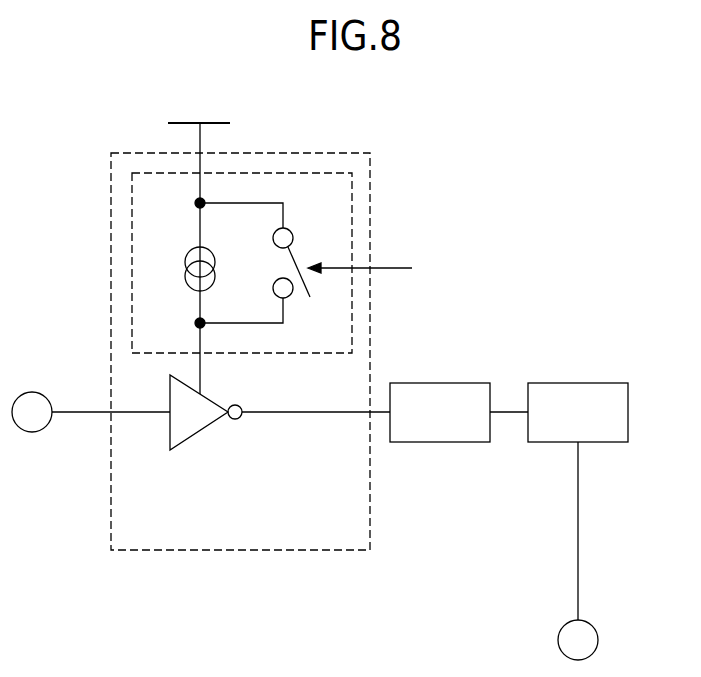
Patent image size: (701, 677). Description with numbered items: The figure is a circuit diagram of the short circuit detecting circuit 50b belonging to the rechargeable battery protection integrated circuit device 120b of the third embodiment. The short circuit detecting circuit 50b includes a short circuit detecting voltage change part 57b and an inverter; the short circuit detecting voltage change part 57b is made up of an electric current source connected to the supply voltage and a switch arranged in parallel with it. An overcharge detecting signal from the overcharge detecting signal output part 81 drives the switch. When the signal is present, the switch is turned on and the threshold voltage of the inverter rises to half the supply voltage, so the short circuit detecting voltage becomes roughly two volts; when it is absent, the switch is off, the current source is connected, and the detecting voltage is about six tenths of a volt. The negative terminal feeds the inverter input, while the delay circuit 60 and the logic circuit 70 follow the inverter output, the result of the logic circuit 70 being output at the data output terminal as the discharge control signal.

The short circuit detecting circuit 50b is at (395, 188).
The short circuit detecting voltage change part 57b is at (302, 173).
The delay circuit 60 is at (440, 383).
The logic circuit 70 is at (578, 383).
The overcharge detecting signal output part 81 is at (396, 269).
The rechargeable battery protection integrated circuit device 120b is at (558, 188).